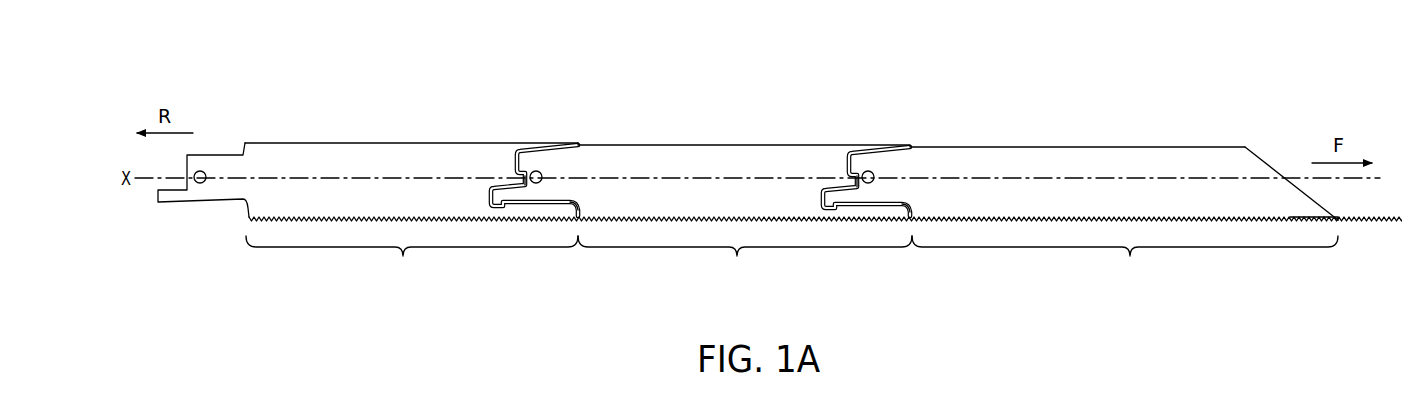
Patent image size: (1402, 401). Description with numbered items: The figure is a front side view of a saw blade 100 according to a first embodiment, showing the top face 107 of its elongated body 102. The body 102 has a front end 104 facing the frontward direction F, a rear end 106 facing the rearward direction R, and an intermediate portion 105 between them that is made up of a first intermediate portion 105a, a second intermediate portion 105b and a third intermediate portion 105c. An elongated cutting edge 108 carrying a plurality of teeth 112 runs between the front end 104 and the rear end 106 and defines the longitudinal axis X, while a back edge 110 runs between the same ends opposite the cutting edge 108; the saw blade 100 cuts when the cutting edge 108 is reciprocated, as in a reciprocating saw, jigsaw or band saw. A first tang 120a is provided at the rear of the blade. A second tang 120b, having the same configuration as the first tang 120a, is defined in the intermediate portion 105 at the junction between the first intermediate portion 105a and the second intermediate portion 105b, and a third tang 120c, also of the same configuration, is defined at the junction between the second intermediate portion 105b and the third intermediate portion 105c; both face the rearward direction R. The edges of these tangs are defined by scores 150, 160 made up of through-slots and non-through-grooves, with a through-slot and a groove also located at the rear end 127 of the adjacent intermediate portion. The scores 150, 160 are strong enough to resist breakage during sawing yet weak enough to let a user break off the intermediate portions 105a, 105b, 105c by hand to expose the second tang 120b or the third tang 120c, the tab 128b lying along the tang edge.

The saw blade 100 is at (768, 165).
The elongated body 102 is at (768, 186).
The front end 104 is at (1258, 155).
The intermediate portion 105 is at (792, 173).
The first intermediate portion 105a is at (412, 262).
The second intermediate portion 105b is at (745, 262).
The third intermediate portion 105c is at (1125, 264).
The rear end 106 is at (240, 202).
The top face 107 is at (1028, 155).
The cutting edge 108 is at (1130, 223).
The back edge 110 is at (412, 142).
The teeth 112 is at (1290, 223).
The first tang 120a is at (175, 200).
The second tang 120b is at (550, 158).
The third tang 120c is at (888, 158).
The rear end of adjacent intermediate portion 127 is at (578, 208).
The joint tab 128b is at (540, 184).
The score 150 is at (540, 183).
The score 160 is at (872, 183).